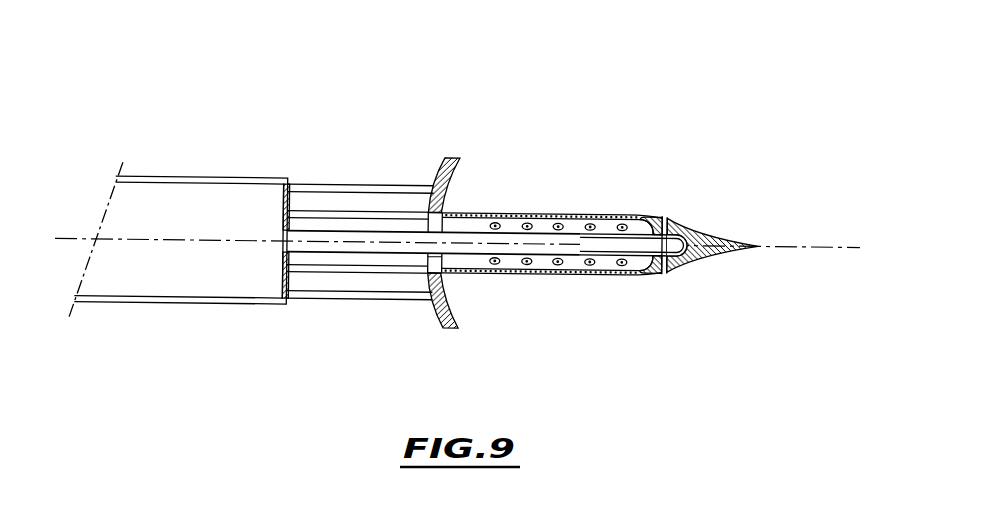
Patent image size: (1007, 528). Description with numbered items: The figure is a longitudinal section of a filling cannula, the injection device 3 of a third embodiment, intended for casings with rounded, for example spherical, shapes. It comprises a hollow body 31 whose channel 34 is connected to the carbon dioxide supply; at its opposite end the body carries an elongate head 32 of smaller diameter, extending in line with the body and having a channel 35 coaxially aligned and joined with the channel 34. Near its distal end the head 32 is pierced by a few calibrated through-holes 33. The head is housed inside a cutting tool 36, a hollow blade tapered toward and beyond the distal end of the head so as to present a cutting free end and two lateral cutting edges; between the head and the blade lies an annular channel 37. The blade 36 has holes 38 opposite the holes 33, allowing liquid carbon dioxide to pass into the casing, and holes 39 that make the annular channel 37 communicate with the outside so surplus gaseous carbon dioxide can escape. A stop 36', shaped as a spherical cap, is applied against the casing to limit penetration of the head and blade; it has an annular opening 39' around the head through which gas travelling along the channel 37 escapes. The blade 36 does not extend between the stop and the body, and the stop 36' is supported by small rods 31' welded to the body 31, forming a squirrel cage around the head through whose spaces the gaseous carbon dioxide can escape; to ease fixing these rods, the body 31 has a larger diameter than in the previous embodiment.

The injection device 3 is at (394, 102).
The hollow body 31 is at (181, 189).
The small rods 31' is at (354, 294).
The elongate head 32 is at (548, 201).
The calibrated through-holes 33 is at (719, 222).
The channel 34 is at (175, 268).
The channel 35 is at (486, 306).
The cutting tool 36 is at (658, 283).
The stop 36' is at (461, 201).
The annular channel 37 is at (633, 293).
The holes 38 is at (701, 233).
The holes 39 is at (558, 251).
The annular opening 39' is at (411, 310).